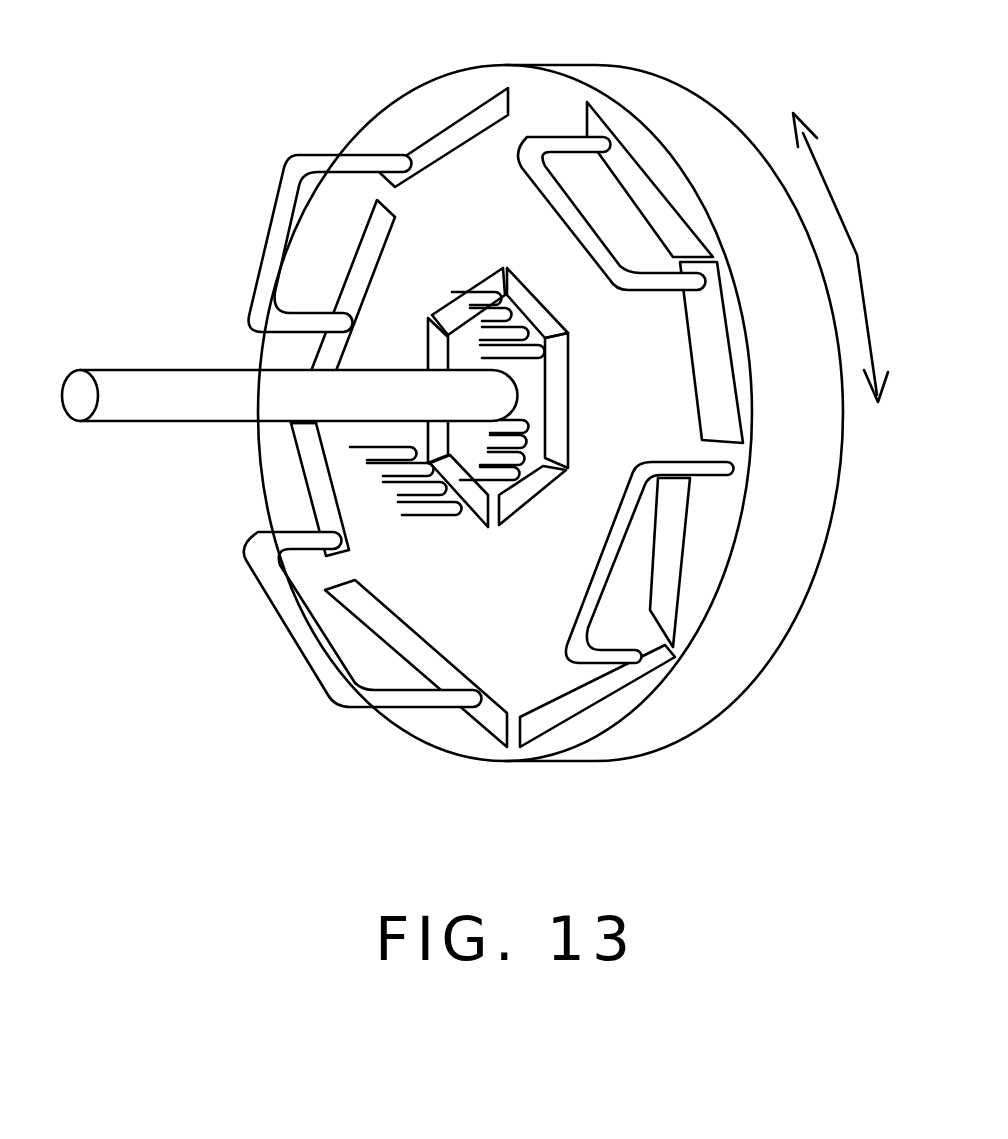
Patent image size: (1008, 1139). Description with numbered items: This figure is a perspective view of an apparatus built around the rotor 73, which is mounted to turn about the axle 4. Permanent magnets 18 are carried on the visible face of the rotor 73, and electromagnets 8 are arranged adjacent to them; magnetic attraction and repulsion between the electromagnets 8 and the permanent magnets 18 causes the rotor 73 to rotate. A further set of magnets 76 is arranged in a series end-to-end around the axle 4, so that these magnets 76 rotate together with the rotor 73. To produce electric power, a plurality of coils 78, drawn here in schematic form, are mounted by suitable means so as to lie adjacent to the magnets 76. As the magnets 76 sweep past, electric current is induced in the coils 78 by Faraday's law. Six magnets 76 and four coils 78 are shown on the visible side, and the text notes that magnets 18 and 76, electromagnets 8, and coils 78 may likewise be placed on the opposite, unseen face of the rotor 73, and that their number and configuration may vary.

The axle 4 is at (145, 397).
The electromagnets 8 is at (548, 137).
The magnets 18 is at (428, 168).
The rotor 73 is at (383, 108).
The magnets 76 is at (495, 293).
The coils 78 is at (542, 322).